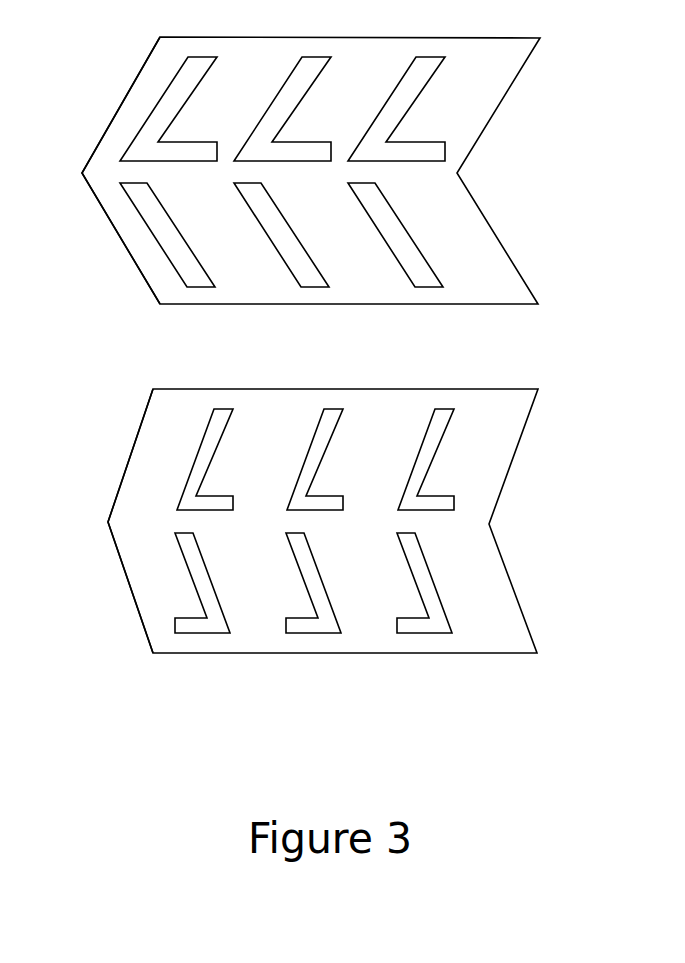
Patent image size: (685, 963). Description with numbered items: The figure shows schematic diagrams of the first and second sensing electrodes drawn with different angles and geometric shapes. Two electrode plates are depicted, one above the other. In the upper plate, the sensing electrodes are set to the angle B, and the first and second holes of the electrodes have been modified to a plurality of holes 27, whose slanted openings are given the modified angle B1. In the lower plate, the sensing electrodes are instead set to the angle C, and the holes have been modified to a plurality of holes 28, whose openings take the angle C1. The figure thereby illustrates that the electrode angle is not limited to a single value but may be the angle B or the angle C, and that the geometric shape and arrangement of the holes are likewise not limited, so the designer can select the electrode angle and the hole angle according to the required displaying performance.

The holes 27 is at (173, 100).
The holes 28 is at (214, 417).
The angle B is at (93, 174).
The angle B1 is at (130, 190).
The angle C is at (125, 519).
The angle C1 is at (183, 503).